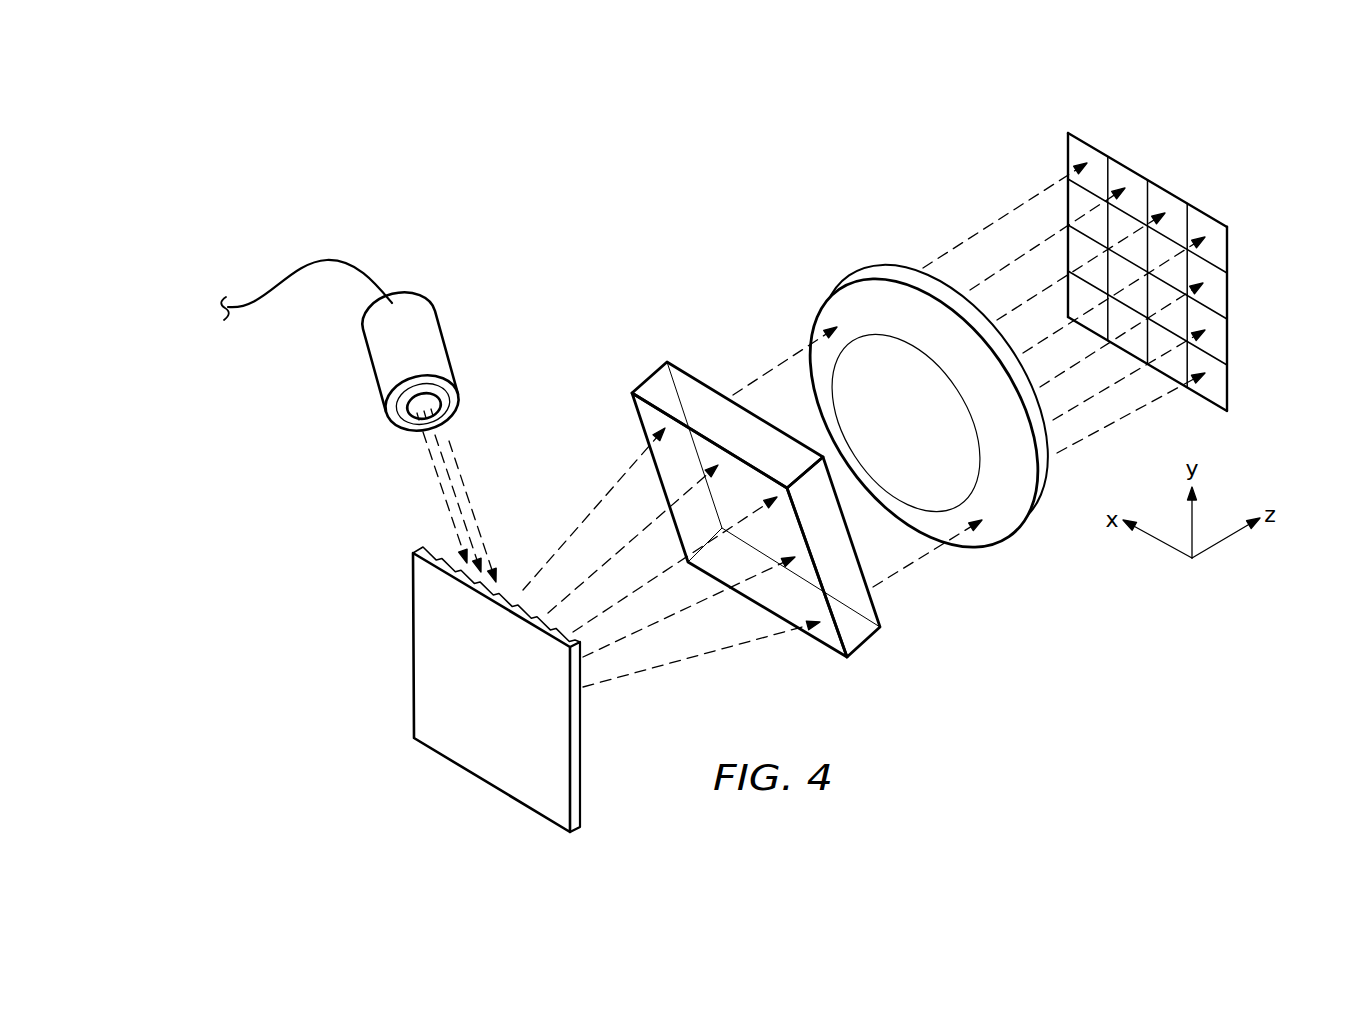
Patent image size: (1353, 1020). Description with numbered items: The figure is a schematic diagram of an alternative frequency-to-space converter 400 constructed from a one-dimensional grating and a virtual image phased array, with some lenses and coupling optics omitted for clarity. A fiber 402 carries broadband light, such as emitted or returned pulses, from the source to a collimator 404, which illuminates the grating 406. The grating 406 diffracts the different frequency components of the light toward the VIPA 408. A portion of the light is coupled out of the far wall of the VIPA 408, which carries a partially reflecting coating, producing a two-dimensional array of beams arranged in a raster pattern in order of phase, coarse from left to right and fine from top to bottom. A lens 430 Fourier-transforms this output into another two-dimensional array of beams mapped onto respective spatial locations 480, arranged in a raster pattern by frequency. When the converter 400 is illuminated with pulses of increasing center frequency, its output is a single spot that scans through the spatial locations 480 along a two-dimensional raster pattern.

The frequency-to-space converter 400 is at (612, 150).
The fiber 402 is at (327, 259).
The collimator 404 is at (373, 378).
The 1D grating 406 is at (485, 767).
The virtual image phased array (VIPA) 408 is at (857, 632).
The lens 430 is at (1000, 531).
The spatial locations 480 is at (1174, 166).